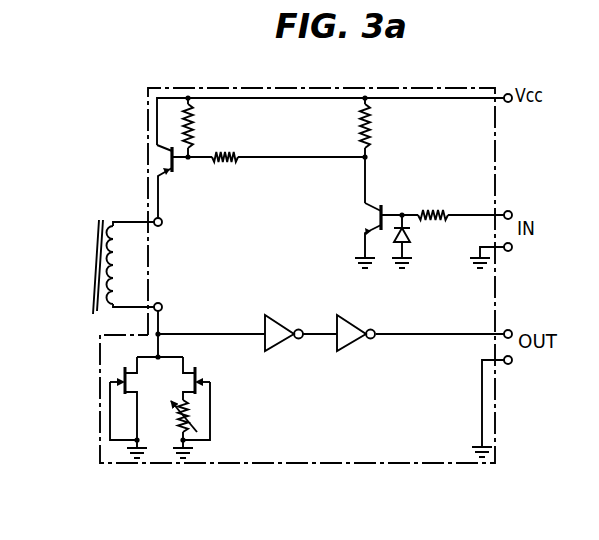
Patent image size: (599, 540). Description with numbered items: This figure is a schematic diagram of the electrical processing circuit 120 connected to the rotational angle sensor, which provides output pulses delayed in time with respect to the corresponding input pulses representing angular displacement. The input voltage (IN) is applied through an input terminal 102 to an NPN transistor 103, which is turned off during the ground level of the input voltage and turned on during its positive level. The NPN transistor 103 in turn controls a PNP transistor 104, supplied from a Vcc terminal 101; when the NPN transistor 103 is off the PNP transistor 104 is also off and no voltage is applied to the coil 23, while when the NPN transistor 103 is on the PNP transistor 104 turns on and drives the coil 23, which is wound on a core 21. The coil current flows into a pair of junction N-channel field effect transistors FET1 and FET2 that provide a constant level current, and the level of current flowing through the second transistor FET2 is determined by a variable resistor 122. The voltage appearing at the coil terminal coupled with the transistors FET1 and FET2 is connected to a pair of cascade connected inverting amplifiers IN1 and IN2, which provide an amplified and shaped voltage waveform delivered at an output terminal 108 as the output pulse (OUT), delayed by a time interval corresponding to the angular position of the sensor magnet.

The circuit 120 is at (165, 88).
The Vcc supply terminal 101 is at (508, 93).
The input terminal 102 is at (508, 211).
The NPN transistor 103 is at (386, 202).
The PNP transistor 104 is at (168, 176).
The output terminal 108 is at (511, 329).
The variable resistor 122 is at (190, 418).
The magnetic core 21 is at (94, 247).
The coil 23 is at (112, 219).
The junction N-channel field effect transistor FET1 is at (113, 366).
The junction N-channel field effect transistor FET2 is at (228, 350).
The inverting amplifier IN1 is at (277, 315).
The inverting amplifier IN2 is at (357, 315).